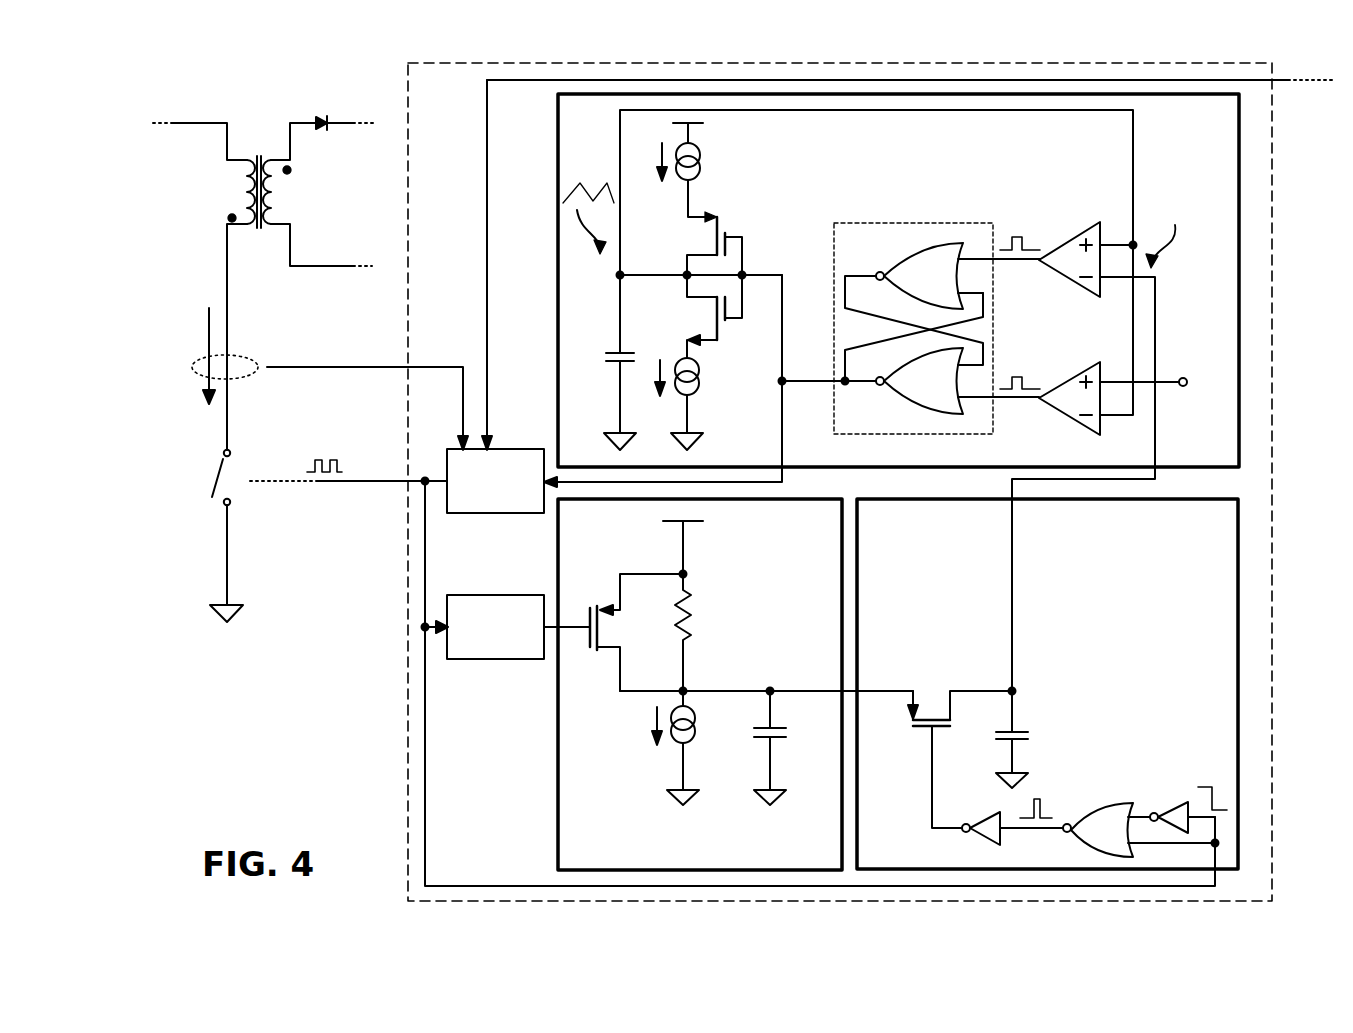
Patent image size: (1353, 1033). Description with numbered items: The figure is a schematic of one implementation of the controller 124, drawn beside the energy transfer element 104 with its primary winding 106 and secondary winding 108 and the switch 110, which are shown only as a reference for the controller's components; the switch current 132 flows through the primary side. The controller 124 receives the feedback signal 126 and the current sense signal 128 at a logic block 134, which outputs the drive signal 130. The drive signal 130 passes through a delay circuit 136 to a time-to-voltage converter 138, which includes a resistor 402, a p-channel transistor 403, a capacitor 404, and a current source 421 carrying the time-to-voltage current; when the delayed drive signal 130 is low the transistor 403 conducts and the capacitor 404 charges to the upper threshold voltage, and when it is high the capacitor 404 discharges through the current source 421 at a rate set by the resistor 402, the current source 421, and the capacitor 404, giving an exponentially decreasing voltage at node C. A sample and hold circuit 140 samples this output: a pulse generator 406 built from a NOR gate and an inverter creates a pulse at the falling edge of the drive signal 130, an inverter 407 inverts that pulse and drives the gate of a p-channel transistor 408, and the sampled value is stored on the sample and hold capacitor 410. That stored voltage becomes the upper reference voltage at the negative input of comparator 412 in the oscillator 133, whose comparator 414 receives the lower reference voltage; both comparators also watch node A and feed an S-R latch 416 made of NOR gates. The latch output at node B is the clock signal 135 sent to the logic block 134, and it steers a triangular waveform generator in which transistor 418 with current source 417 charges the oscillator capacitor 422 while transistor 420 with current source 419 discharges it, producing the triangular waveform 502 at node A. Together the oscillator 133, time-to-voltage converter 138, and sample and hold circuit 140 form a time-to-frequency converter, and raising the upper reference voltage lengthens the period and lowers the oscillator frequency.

The energy transfer element T1 104 is at (257, 258).
The primary winding 106 is at (218, 206).
The secondary winding 108 is at (298, 206).
The switch S1 110 is at (210, 458).
The controller 124 is at (388, 684).
The feedback signal 126 is at (480, 172).
The current sense signal 128 is at (424, 350).
The drive signal 130 is at (325, 446).
The switch current waveform I_D 132 is at (187, 303).
The oscillator 133 is at (556, 140).
The logic block 134 is at (497, 520).
The clock signal 135 is at (790, 345).
The delay circuit 136 is at (493, 672).
The time-to-voltage converter 138 is at (550, 756).
The sample and hold circuit 140 is at (1245, 650).
The resistor 402 is at (698, 618).
The transistor 403 is at (608, 588).
The capacitor 404 is at (782, 748).
The pulse generator 406 is at (1130, 782).
The inverter 407 is at (975, 838).
The transistor 408 is at (920, 740).
The sample and hold capacitor 410 is at (1033, 742).
The comparator 412 is at (1067, 212).
The comparator 414 is at (1063, 355).
The S-R latch 416 is at (905, 208).
The current source 417 is at (705, 160).
The transistor 418 is at (725, 220).
The current source 419 is at (705, 380).
The transistor 420 is at (728, 327).
The current source 421 is at (700, 745).
The oscillator capacitor 422 is at (612, 342).
The waveform at node A 502 is at (605, 180).